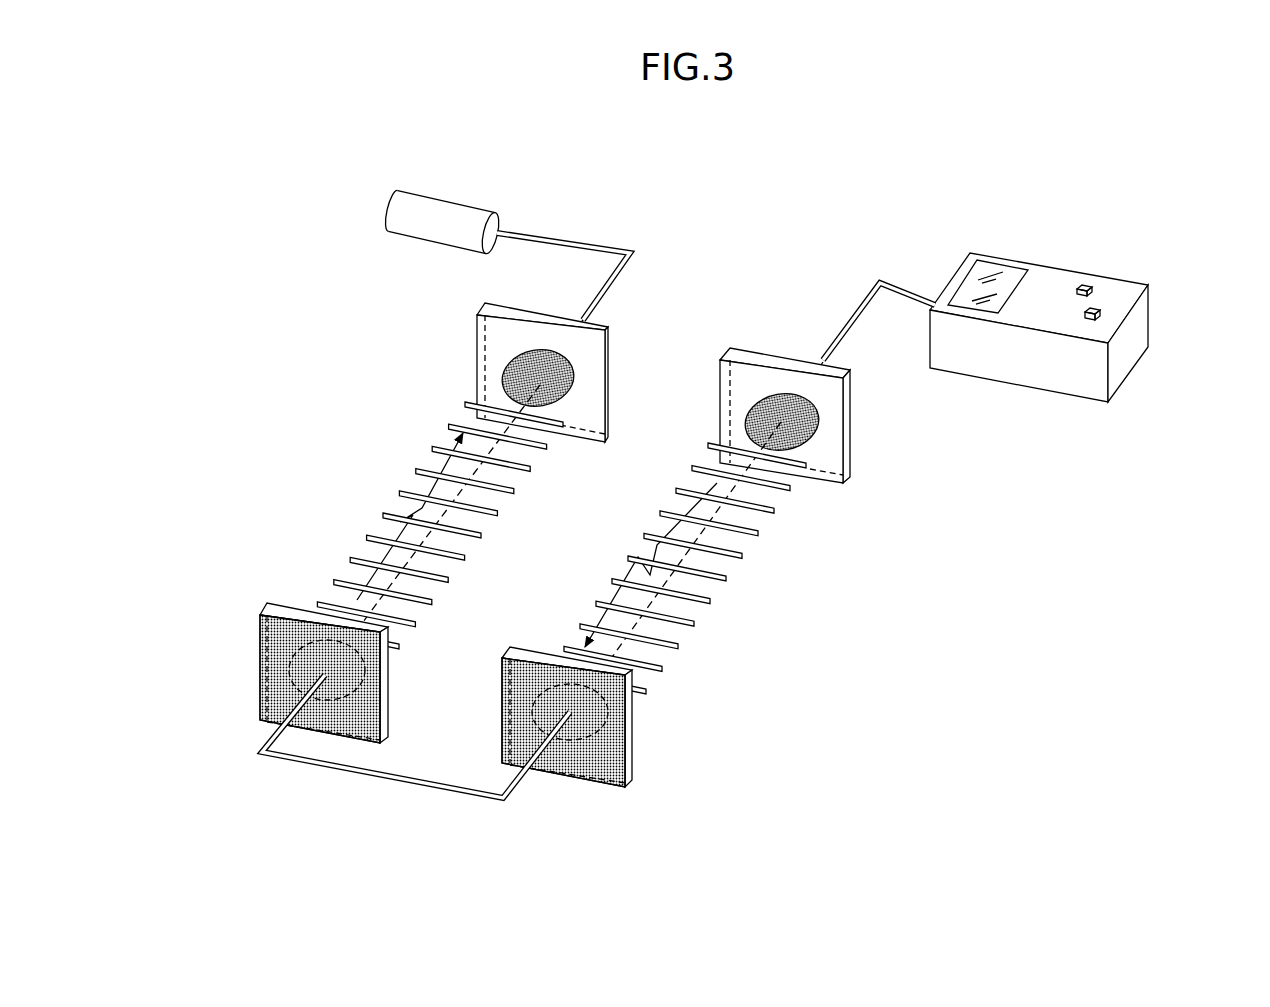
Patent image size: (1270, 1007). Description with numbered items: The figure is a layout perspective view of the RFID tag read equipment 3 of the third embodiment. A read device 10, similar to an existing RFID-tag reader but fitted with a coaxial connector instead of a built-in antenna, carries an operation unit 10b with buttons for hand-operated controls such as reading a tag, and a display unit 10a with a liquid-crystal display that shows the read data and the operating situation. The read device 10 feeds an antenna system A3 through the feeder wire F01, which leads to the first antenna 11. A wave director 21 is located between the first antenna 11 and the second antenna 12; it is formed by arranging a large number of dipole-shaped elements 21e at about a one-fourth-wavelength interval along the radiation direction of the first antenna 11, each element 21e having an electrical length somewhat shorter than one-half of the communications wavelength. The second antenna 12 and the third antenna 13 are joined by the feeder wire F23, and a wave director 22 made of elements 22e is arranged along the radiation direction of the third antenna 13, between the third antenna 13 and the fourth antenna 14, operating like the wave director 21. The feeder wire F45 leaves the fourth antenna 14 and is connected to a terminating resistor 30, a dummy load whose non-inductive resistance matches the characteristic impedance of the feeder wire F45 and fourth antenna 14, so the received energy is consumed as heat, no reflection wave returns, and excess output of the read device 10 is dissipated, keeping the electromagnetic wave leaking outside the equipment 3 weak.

The RFID tag read equipment 3 is at (889, 162).
The read device 10 is at (1045, 278).
The display unit 10a is at (982, 270).
The operation unit 10b is at (1082, 286).
The feeder wire F01 is at (904, 289).
The antenna system A3 is at (740, 810).
The terminating resistor 30 is at (427, 208).
The feeder wire F45 is at (560, 237).
The fourth antenna 14 is at (495, 345).
The first antenna 11 is at (830, 413).
The wave director 22 is at (467, 383).
The elements 22e is at (530, 466).
The wave director 21 is at (638, 700).
The elements 21e is at (661, 512).
The third antenna 13 is at (260, 697).
The second antenna 12 is at (627, 767).
The feeder wire F23 is at (348, 772).